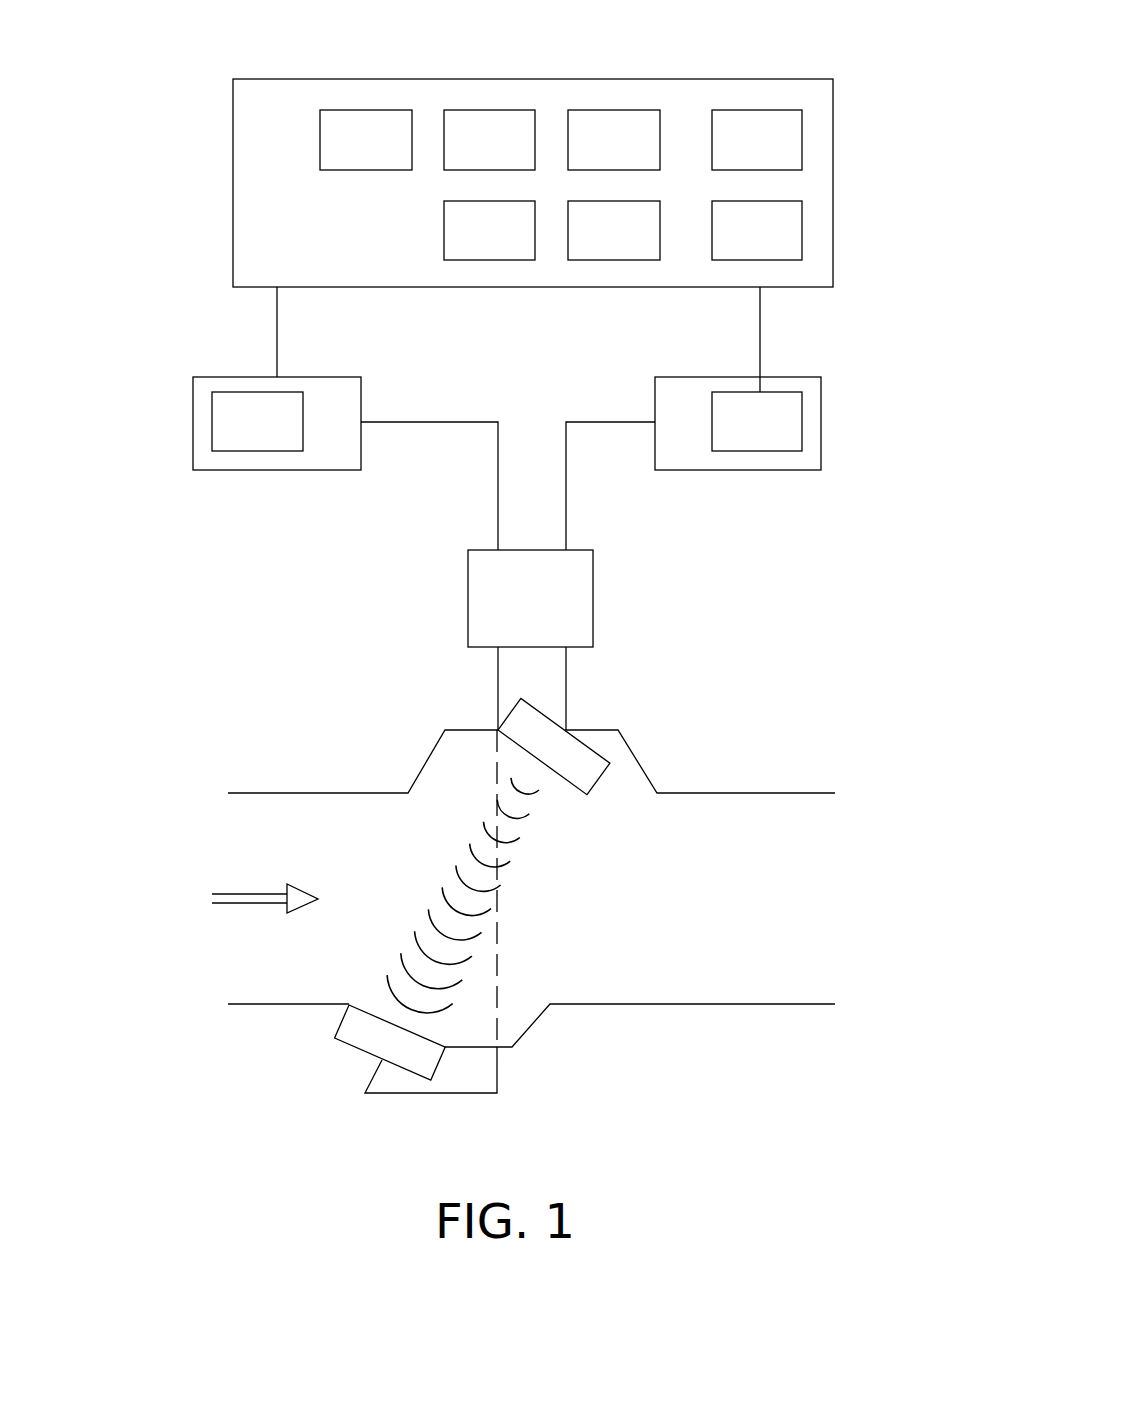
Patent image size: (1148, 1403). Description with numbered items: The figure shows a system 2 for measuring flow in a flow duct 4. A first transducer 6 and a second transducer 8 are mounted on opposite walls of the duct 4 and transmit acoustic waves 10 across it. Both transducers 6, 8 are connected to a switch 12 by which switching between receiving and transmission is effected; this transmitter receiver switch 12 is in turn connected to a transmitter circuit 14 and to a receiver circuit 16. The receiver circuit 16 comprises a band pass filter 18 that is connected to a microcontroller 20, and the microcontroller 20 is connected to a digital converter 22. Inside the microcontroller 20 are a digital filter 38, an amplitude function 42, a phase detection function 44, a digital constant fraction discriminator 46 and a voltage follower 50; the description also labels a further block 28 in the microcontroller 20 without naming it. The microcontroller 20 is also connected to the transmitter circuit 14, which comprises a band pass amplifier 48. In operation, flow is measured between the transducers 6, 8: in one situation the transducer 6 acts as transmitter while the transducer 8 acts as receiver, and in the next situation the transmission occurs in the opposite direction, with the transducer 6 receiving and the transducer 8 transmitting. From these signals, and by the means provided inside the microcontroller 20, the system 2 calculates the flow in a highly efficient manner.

The system 2 is at (126, 84).
The flow duct 4 is at (297, 793).
The first transducer 6 is at (583, 753).
The second transducer 8 is at (347, 1045).
The acoustic waves 10 is at (522, 860).
The switch 12 is at (593, 598).
The transmitter circuit 14 is at (275, 470).
The receiver circuit 16 is at (747, 470).
The band pass filter 18 is at (787, 422).
The microcontroller 20 is at (833, 99).
The digital converter 22 is at (802, 226).
The signal processing module 28 is at (802, 141).
The digital filter 38 is at (610, 110).
The amplitude function 42 is at (611, 260).
The phase detection function 44 is at (488, 110).
The digital constant fraction discriminator 46 is at (492, 260).
The band pass amplifier 48 is at (212, 420).
The voltage follower 50 is at (374, 110).